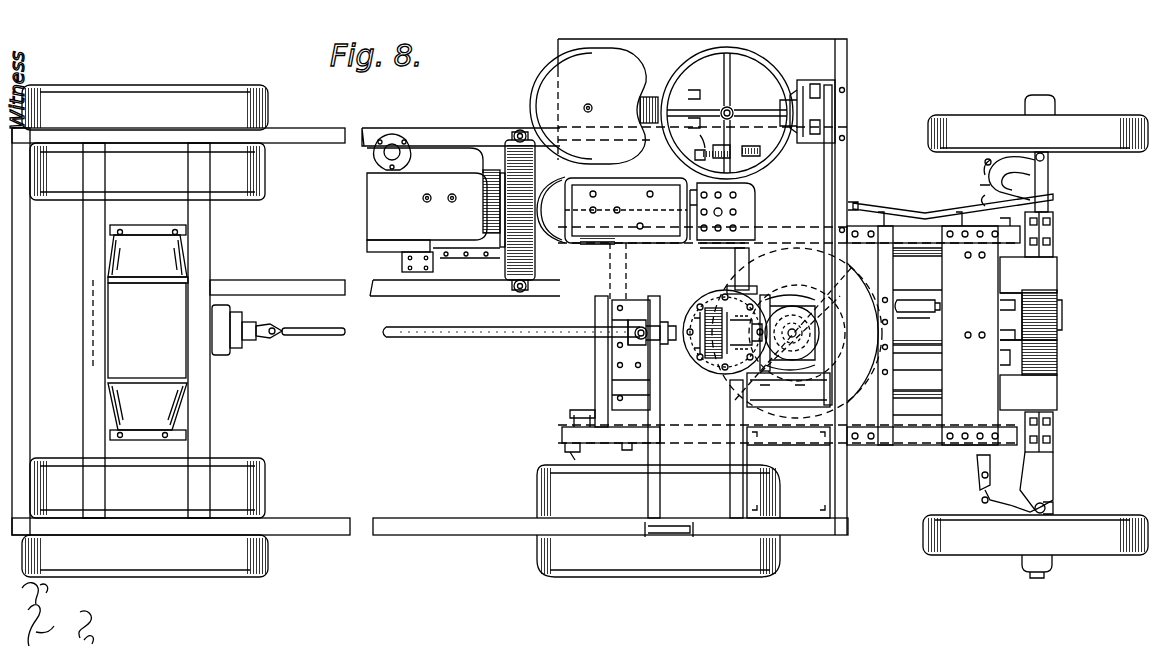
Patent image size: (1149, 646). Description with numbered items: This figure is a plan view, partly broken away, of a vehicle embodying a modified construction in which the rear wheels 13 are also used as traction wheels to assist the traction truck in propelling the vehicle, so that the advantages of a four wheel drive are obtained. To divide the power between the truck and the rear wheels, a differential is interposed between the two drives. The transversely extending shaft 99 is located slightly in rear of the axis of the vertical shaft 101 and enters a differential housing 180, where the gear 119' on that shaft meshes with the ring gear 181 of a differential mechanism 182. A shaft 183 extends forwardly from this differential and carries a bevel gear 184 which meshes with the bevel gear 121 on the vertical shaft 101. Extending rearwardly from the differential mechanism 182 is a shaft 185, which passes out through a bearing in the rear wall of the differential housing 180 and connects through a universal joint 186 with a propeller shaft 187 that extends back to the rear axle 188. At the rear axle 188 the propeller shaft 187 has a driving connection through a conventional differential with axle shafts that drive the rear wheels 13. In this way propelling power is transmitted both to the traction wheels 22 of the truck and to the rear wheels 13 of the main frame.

The rear wheels 13 is at (266, 100).
The traction wheels 22 is at (535, 140).
The transversely extending shaft 99 is at (742, 243).
The vertical shaft 101 is at (882, 287).
The gear 119' is at (753, 271).
The bevel gear 121 is at (888, 345).
The differential housing 180 is at (716, 360).
The ring gear 181 is at (734, 372).
The differential mechanism 182 is at (741, 376).
The shaft 183 is at (788, 472).
The bevel gear 184 is at (790, 307).
The shaft 185 is at (641, 225).
The universal joint 186 is at (637, 338).
The propeller shaft 187 is at (541, 323).
The rear axle 188 is at (170, 395).